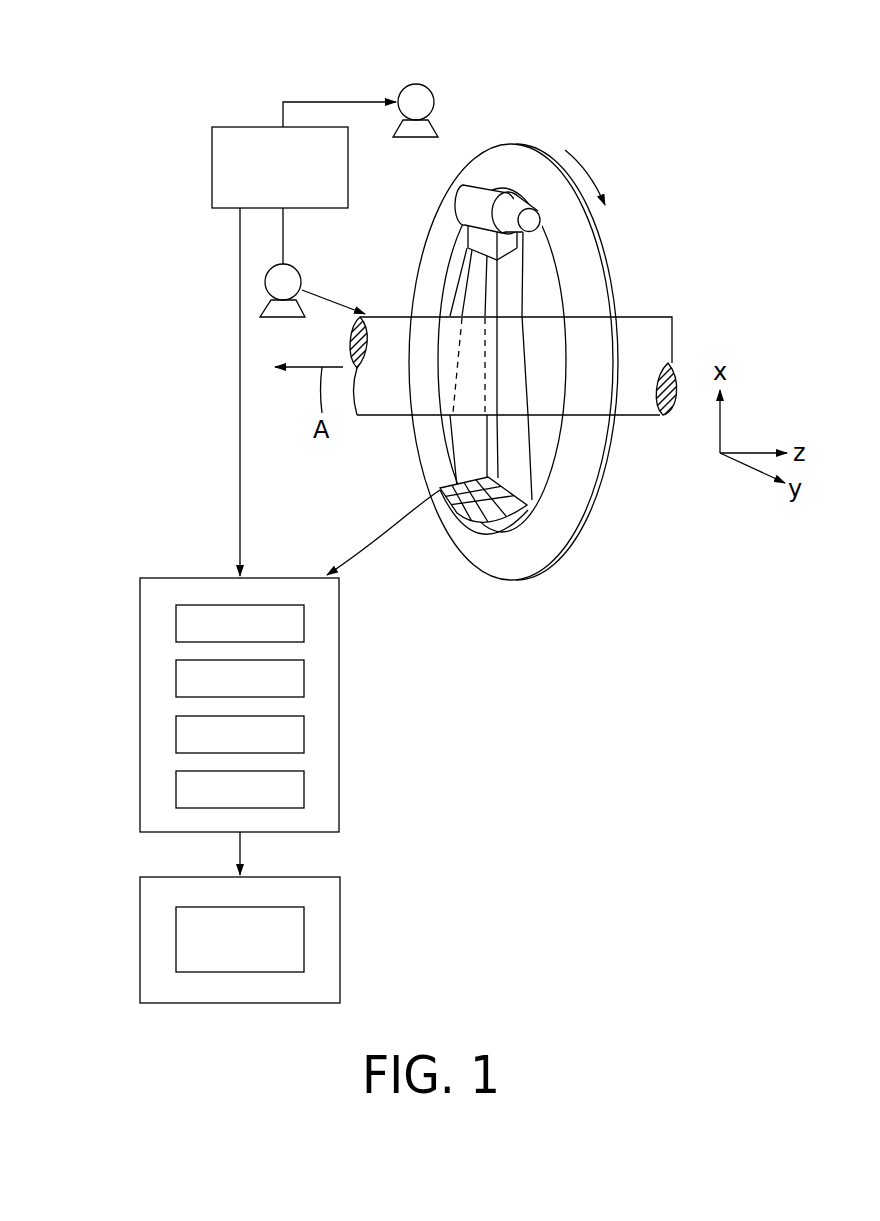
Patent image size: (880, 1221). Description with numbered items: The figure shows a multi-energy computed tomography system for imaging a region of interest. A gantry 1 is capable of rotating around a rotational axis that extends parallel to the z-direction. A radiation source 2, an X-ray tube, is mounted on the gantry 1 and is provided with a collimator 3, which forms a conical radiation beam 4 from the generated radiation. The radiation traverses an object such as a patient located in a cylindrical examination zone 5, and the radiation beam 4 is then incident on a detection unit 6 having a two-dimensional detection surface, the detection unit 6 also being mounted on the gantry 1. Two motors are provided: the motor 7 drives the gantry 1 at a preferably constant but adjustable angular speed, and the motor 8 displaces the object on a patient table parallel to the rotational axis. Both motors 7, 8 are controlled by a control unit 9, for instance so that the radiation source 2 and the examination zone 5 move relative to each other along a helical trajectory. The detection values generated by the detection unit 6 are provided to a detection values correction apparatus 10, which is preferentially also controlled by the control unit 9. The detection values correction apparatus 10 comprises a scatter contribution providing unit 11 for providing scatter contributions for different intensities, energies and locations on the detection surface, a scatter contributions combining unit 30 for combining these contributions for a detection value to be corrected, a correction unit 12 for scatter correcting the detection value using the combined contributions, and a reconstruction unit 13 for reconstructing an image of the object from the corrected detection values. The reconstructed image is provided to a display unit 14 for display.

The gantry 1 is at (562, 512).
The radiation source 2 is at (486, 190).
The collimator 3 is at (512, 245).
The radiation beam 4 is at (502, 466).
The examination zone 5 is at (392, 316).
The detection unit 6 is at (468, 530).
The motor 7 is at (428, 85).
The motor 8 is at (300, 272).
The control unit 9 is at (304, 339).
The detection values correction apparatus 10 is at (253, 682).
The scatter contribution providing unit 11 is at (240, 623).
The scatter contributions combining unit 30 is at (240, 678).
The correction unit 12 is at (240, 734).
The reconstruction unit 13 is at (240, 789).
The display unit 14 is at (140, 943).